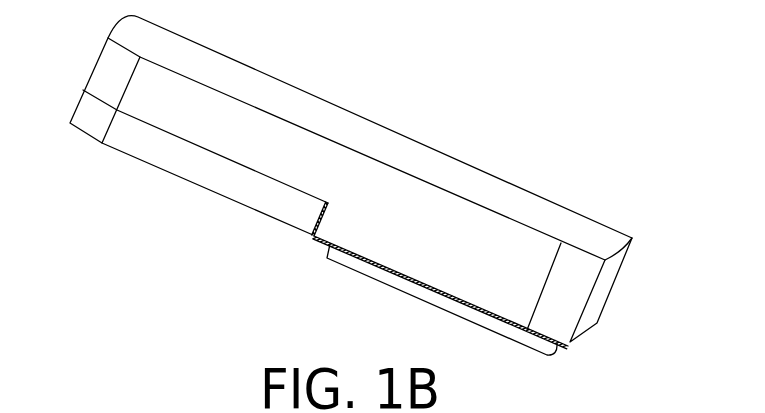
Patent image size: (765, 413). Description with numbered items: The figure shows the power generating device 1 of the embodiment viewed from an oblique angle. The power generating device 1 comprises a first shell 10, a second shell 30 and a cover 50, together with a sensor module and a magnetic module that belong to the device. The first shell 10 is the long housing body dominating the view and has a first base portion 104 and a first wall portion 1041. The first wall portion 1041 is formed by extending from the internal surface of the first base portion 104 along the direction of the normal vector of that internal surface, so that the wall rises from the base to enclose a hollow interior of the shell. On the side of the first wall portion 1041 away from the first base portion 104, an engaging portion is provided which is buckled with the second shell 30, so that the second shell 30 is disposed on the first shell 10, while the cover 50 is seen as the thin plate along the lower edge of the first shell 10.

The power generating device 1 is at (342, 185).
The first shell 10 is at (351, 182).
The first base portion 104 is at (403, 152).
The first wall portion 1041 is at (447, 220).
The second shell 30 is at (310, 223).
The cover 50 is at (387, 270).